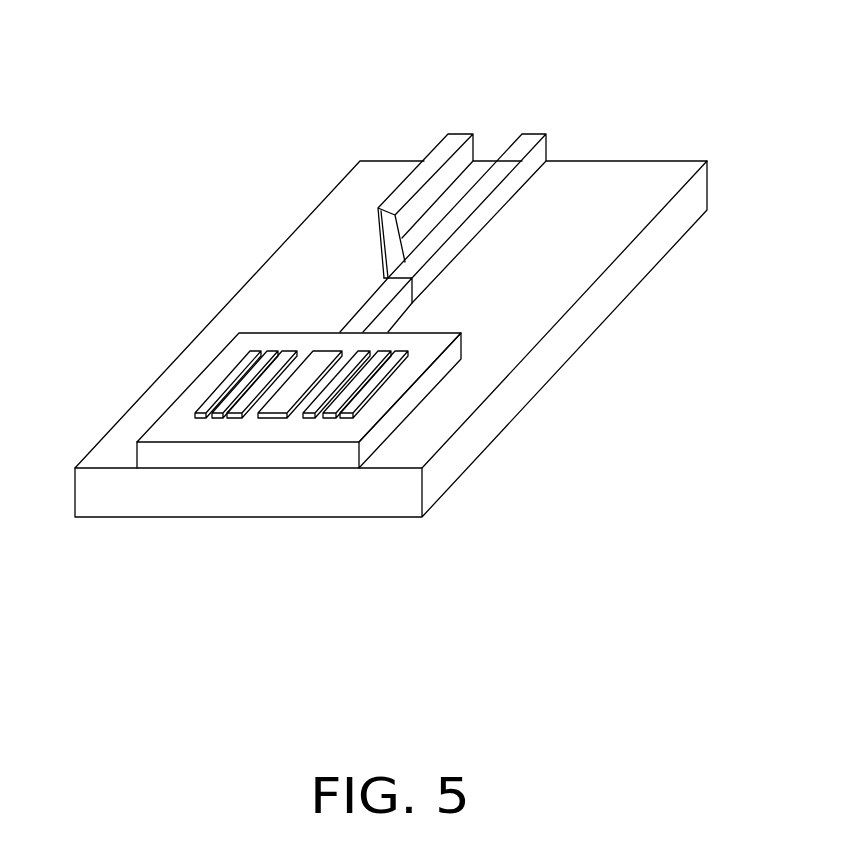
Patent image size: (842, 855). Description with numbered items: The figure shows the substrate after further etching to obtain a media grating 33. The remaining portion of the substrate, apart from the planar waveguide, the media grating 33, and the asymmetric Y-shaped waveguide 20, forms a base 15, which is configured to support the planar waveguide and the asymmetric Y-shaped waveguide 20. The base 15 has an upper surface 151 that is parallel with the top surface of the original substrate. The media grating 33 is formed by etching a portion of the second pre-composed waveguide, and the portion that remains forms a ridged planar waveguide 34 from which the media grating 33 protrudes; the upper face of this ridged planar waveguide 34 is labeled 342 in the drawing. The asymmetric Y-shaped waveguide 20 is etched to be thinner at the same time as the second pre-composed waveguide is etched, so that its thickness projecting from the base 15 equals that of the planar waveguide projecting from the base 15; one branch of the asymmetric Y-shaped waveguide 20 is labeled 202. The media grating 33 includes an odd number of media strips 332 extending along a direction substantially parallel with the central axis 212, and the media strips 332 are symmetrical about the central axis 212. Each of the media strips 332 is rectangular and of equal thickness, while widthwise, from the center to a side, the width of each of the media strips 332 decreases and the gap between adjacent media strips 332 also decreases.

The base 15 is at (436, 285).
The upper surface 151 is at (528, 302).
The asymmetric Y-shaped waveguide 20 is at (388, 173).
The branch arm of waveguide 202 is at (452, 148).
The central axis 212 is at (350, 332).
The ridged planar waveguide 34 is at (309, 377).
The top surface of mounting block 342 is at (175, 425).
The media grating 33 is at (285, 480).
The media strips 332 is at (213, 420).